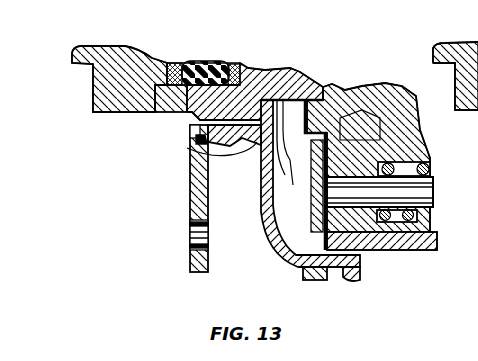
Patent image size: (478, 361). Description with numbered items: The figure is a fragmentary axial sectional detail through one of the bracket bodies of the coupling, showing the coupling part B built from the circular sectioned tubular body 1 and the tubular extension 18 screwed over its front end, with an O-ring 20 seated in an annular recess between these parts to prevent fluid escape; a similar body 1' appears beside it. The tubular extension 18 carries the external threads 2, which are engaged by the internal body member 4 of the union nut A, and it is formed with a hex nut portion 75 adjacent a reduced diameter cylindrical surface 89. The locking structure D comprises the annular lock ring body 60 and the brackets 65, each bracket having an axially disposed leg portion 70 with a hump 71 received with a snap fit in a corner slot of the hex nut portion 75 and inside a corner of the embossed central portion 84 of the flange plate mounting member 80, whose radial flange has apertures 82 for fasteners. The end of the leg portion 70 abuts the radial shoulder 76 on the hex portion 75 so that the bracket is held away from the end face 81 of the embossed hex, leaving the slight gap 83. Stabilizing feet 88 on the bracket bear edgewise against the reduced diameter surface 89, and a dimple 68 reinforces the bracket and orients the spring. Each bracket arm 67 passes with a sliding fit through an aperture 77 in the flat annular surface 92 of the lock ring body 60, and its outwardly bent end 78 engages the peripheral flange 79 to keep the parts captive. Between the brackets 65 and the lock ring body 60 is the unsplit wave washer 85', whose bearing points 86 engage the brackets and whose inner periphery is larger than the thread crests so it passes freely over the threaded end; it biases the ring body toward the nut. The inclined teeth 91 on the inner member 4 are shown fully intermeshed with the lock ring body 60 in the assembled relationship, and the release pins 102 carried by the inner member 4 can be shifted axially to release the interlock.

The tubular body 1 is at (107, 79).
The second frame member 1' is at (455, 91).
The external threads 2 is at (375, 85).
The internal body member 4 is at (422, 162).
The tubular extension 18 is at (355, 84).
The O-ring 20 is at (210, 62).
The annular lock ring body 60 is at (313, 242).
The retaining arm and spring locating bracket 65 is at (272, 256).
The bracket arm 67 is at (340, 278).
The dimple 68 is at (292, 182).
The leg portion 70 is at (190, 160).
The hump 71 is at (218, 160).
The hex nut portion 75 is at (193, 116).
The radial shoulder 76 is at (195, 140).
The apertures 77 is at (315, 280).
The outwardly bent arm ends 78 is at (362, 273).
The peripheral flanges 79 is at (297, 270).
The mounting member 80 is at (190, 210).
The end face 81 is at (251, 197).
The apertures 82 is at (192, 242).
The gap 83 is at (255, 91).
The embossed central portion 84 is at (259, 186).
The unsplit wave washer 85' is at (301, 111).
The bearing points 86 is at (270, 68).
The stabilizing feet 88 is at (257, 70).
The reduced diameter cylindrical surface 89 is at (320, 96).
The inclined teeth 91 is at (343, 130).
The flat annular surface 92 is at (427, 190).
The release pins 102 is at (418, 187).
The union nut A is at (436, 252).
The coupling part B is at (102, 113).
The locking structure D is at (261, 228).